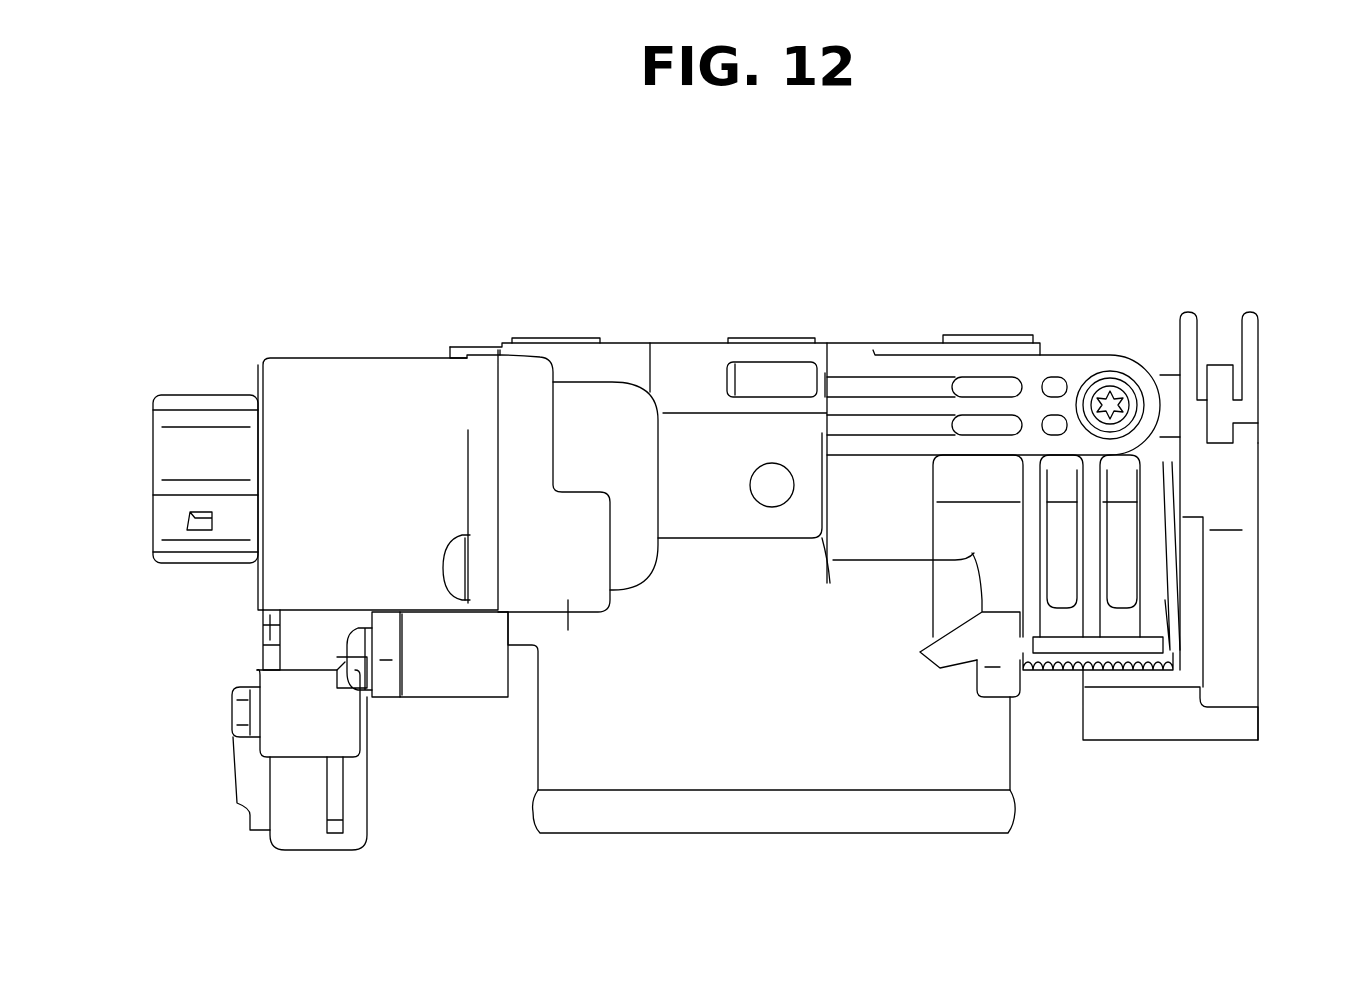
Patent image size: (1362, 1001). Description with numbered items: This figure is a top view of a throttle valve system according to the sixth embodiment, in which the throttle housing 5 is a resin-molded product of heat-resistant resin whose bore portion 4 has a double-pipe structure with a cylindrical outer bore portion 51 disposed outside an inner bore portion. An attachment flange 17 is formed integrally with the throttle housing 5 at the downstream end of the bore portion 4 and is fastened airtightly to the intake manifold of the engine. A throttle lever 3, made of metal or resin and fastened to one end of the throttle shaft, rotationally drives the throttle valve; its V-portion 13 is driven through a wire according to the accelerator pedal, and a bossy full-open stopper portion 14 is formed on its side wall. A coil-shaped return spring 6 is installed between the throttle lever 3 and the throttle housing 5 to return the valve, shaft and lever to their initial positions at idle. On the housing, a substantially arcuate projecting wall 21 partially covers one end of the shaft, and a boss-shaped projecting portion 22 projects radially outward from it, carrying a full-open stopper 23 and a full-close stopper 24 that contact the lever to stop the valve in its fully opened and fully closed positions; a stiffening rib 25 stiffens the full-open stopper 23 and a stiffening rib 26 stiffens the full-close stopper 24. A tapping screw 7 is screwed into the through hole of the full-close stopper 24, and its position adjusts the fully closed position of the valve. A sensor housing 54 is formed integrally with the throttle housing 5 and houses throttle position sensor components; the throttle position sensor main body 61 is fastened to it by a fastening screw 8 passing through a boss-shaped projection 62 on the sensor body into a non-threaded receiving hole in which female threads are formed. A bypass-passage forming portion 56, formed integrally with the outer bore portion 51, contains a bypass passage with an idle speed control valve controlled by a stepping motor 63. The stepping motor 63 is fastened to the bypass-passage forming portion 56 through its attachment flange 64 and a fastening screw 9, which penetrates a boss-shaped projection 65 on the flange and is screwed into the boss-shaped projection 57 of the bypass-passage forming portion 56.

The throttle lever 3 is at (1266, 555).
The bore portion 4 is at (742, 704).
The throttle housing 5 is at (1020, 777).
The return spring 6 is at (1060, 672).
The tapping screw 7 is at (1110, 400).
The fastening screw 8 is at (350, 630).
The fastening screw 9 is at (440, 578).
The V-portion 13 is at (1228, 333).
The full-open stopper portion 14 is at (1157, 720).
The attachment flange 17 is at (700, 343).
The projecting wall 21 is at (972, 553).
The boss-shaped projecting portion 22 is at (1132, 344).
The full-open stopper 23 is at (1160, 640).
The full-close stopper 24 is at (1137, 433).
The stiffening rib 25 is at (1155, 595).
The stiffening rib 26 is at (995, 447).
The outer bore portion 51 is at (760, 834).
The sensor housing 54 is at (456, 755).
The bypass-passage forming portion 56 is at (612, 382).
The boss-shaped projection 57 is at (568, 630).
The throttle position sensor main body 61 is at (262, 668).
The boss-shaped projection 62 is at (456, 755).
The stepping motor 63 is at (290, 356).
The attachment flange 64 is at (503, 410).
The boss-shaped projection 65 is at (465, 470).